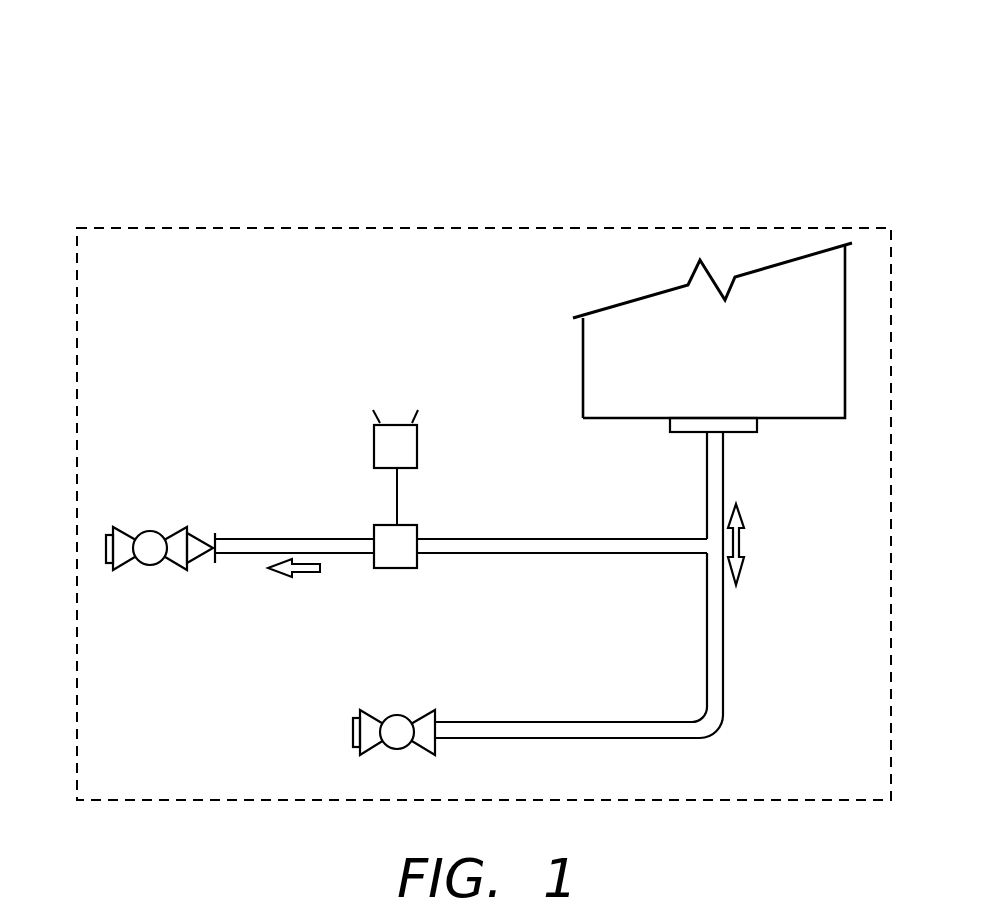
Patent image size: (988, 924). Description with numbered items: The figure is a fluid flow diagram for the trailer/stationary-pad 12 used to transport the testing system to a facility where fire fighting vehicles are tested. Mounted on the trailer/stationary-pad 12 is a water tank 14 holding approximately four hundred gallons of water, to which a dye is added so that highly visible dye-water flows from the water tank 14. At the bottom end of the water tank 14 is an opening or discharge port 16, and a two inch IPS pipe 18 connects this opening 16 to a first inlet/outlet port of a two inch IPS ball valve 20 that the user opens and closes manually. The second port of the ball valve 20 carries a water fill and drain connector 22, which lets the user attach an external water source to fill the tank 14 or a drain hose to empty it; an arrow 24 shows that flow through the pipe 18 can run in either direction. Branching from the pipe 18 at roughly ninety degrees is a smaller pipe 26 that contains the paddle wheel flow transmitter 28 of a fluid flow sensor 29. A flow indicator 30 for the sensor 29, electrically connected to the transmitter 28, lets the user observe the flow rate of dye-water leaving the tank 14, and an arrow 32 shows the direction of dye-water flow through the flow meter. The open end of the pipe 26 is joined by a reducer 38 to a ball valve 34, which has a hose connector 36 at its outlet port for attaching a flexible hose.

The trailer/stationary-pad 12 is at (203, 218).
The water tank 14 is at (583, 348).
The discharge port 16 is at (707, 432).
The pipe 18 is at (723, 638).
The ball valve 20 is at (392, 710).
The water fill and drain connector 22 is at (353, 728).
The arrow 24 is at (740, 540).
The pipe 26 is at (517, 538).
The paddle wheel flow transmitter 28 is at (398, 568).
The fluid flow sensor 29 is at (398, 482).
The flow indicator 30 is at (419, 440).
The arrow 32 is at (305, 577).
The ball valve 34 is at (142, 527).
The hose connector 36 is at (106, 548).
The reducer 38 is at (215, 533).